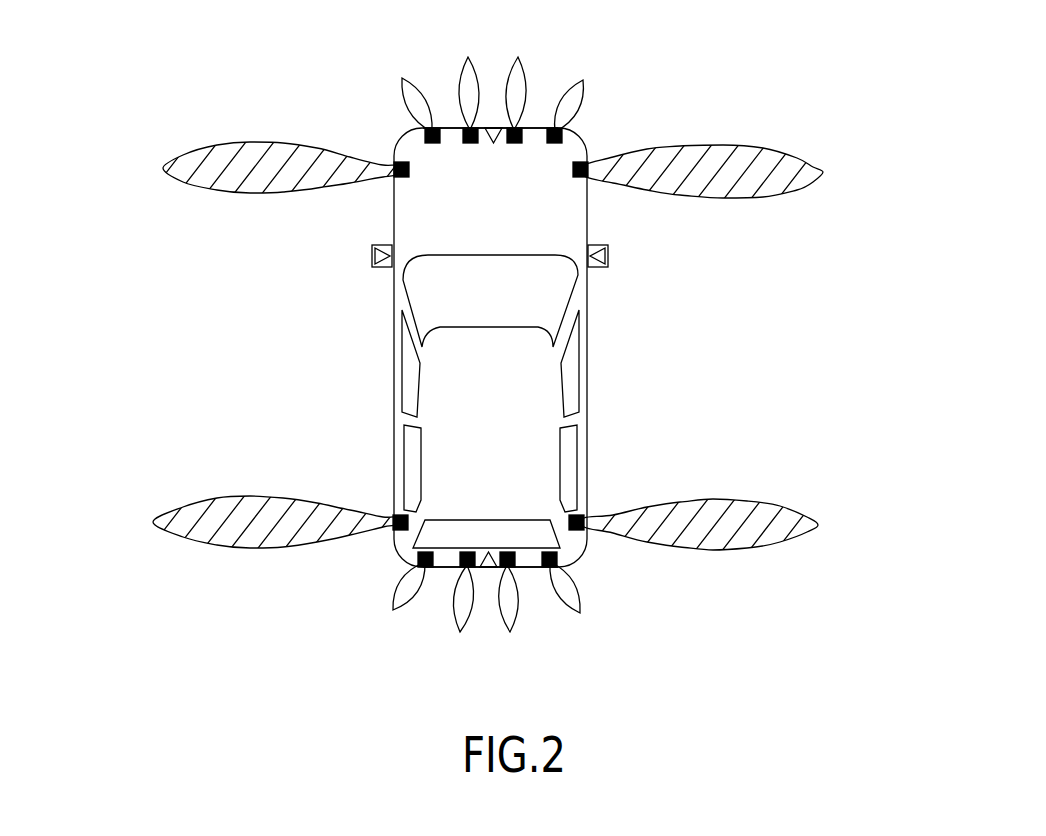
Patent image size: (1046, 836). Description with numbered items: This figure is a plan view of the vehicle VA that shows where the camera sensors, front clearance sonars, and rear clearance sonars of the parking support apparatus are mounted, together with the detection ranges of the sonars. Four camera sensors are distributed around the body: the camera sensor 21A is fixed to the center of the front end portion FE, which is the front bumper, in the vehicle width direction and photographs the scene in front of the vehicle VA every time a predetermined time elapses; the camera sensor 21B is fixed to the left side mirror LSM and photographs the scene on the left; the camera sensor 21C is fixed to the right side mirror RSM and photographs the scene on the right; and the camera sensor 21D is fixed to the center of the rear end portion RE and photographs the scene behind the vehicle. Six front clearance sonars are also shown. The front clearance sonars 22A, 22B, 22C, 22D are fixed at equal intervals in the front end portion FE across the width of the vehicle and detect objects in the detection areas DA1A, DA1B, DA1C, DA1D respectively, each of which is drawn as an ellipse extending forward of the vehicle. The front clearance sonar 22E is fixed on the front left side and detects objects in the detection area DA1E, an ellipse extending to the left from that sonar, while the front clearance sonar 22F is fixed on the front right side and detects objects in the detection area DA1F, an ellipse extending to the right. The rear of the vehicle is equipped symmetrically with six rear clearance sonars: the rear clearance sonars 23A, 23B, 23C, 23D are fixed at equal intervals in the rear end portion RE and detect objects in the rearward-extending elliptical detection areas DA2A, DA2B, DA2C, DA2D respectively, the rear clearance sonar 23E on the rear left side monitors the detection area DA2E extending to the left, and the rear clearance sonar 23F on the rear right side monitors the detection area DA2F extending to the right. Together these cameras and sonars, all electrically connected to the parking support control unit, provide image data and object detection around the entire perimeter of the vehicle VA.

The vehicle VA is at (390, 370).
The front end portion FE is at (530, 132).
The rear end portion RE is at (445, 566).
The left side mirror LSM is at (382, 270).
The right side mirror RSM is at (597, 270).
The camera sensor 21A is at (493, 127).
The camera sensor 21B is at (372, 255).
The camera sensor 21C is at (610, 252).
The camera sensor 21D is at (488, 572).
The front clearance sonar 22A is at (412, 132).
The front clearance sonar 22B is at (455, 125).
The front clearance sonar 22C is at (530, 130).
The front clearance sonar 22D is at (565, 133).
The front clearance sonar 22E is at (395, 186).
The front clearance sonar 22F is at (590, 187).
The rear clearance sonar 23A is at (410, 560).
The rear clearance sonar 23B is at (440, 575).
The rear clearance sonar 23C is at (530, 578).
The rear clearance sonar 23D is at (565, 566).
The rear clearance sonar 23E is at (395, 512).
The rear clearance sonar 23F is at (585, 512).
The detection area DA1A is at (398, 88).
The detection area DA1B is at (457, 92).
The detection area DA1C is at (527, 93).
The detection area DA1D is at (585, 82).
The detection area DA1E is at (163, 172).
The detection area DA1F is at (823, 172).
The detection area DA2A is at (398, 610).
The detection area DA2B is at (455, 636).
The detection area DA2C is at (517, 640).
The detection area DA2D is at (583, 612).
The detection area DA2E is at (153, 522).
The detection area DA2F is at (818, 525).